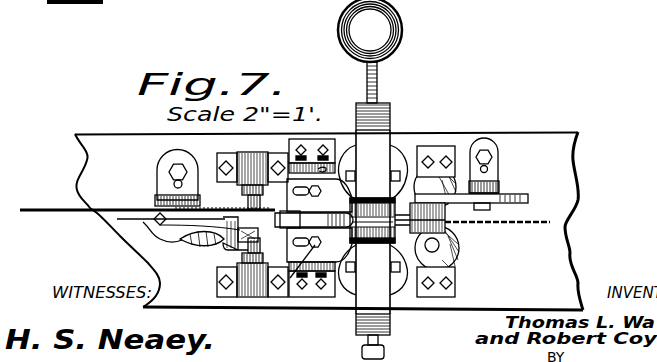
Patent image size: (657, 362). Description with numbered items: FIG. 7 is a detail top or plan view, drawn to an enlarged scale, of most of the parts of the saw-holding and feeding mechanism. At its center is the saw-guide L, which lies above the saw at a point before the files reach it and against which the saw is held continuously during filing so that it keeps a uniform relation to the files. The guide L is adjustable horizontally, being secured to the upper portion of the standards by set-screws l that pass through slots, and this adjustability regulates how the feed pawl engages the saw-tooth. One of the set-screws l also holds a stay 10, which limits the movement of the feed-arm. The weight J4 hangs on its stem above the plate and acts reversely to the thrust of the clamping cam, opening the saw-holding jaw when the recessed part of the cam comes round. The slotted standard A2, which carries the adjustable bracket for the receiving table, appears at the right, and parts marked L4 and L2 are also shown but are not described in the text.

The weight J4 is at (391, 32).
The upper bearing block L4 is at (315, 187).
The saw-guide L is at (298, 206).
The lower bearing block L2 is at (330, 293).
The set-screws l is at (288, 297).
The stay 10 is at (228, 250).
The standard A2 is at (560, 257).